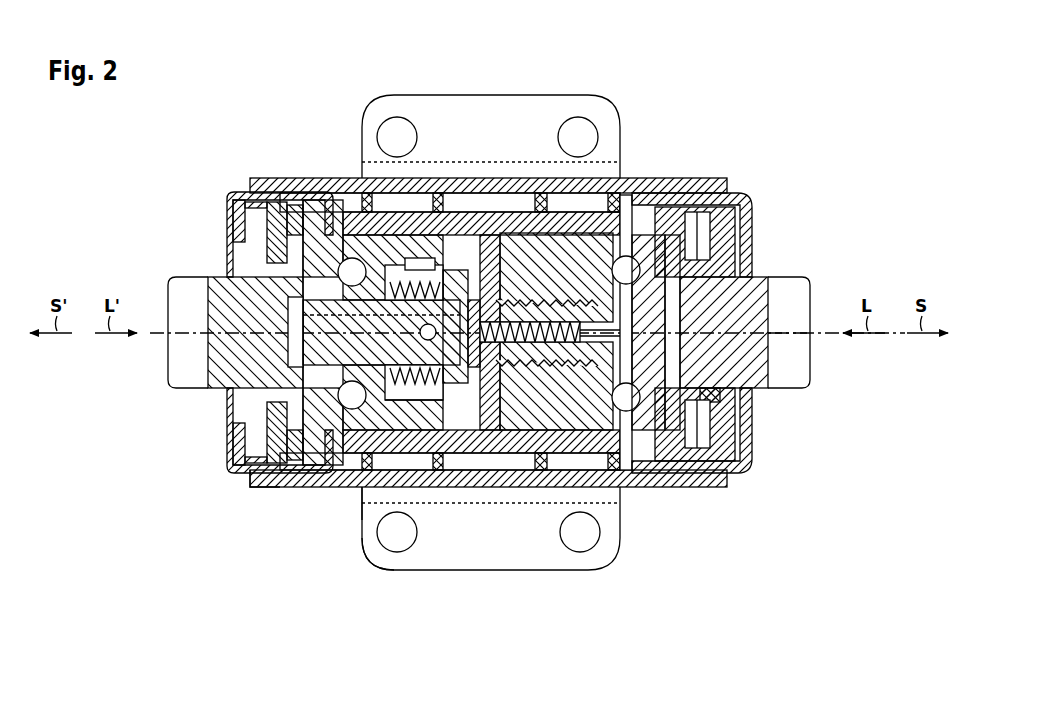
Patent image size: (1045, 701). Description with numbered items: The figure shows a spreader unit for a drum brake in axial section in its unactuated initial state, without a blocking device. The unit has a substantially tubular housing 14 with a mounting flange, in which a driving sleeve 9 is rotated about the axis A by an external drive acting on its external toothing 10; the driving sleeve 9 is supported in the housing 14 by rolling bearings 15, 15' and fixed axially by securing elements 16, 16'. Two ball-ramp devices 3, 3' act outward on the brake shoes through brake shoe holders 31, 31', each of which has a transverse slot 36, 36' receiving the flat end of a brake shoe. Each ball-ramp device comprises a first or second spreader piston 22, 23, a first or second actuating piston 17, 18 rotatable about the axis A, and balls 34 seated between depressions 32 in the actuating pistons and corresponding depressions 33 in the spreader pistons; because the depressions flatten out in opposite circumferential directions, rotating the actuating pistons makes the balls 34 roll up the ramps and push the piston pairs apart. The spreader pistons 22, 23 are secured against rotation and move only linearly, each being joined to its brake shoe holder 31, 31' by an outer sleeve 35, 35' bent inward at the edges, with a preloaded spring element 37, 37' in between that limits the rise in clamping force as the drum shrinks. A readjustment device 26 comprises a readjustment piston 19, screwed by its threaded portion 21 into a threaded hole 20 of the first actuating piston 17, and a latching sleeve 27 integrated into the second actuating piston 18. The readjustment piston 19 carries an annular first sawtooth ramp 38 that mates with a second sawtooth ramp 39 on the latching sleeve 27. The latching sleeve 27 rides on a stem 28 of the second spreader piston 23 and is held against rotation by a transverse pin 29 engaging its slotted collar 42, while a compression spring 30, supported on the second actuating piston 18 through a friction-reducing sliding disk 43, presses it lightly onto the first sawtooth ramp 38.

The ball-ramp device 3 is at (522, 352).
The ball-ramp device 3' is at (522, 323).
The driving sleeve 9 is at (522, 275).
The external toothing 10 is at (603, 112).
The housing 14 is at (522, 275).
The rolling bearing 15 is at (522, 299).
The rolling bearing 15' is at (450, 302).
The securing element 16 is at (513, 538).
The securing element 16' is at (348, 519).
The first actuating piston 17 is at (632, 262).
The second actuating piston 18 is at (522, 312).
The readjustment piston 19 is at (480, 468).
The threaded hole 20 is at (522, 405).
The threaded portion 21 is at (556, 468).
The first spreader piston 22 is at (672, 470).
The second spreader piston 23 is at (300, 468).
The readjustment device 26 is at (522, 275).
The latching sleeve 27 is at (522, 405).
The stem 28 is at (238, 278).
The transverse pin 29 is at (522, 275).
The compression spring 30 is at (522, 330).
The brake shoe holder 31 is at (522, 330).
The brake shoe holder 31' is at (522, 330).
The depression 32 is at (522, 312).
The depression 33 is at (318, 468).
The ball 34 is at (522, 350).
The outer sleeve 35 is at (522, 340).
The outer sleeve 35' is at (241, 489).
The transverse slot 36 is at (811, 346).
The transverse slot 36' is at (163, 323).
The spring element 37 is at (522, 312).
The spring element 37' is at (522, 330).
The first sawtooth ramp 38 is at (433, 256).
The second sawtooth ramp 39 is at (452, 480).
The slotted collar 42 is at (365, 565).
The sliding disk 43 is at (437, 468).
The axis A is at (795, 335).